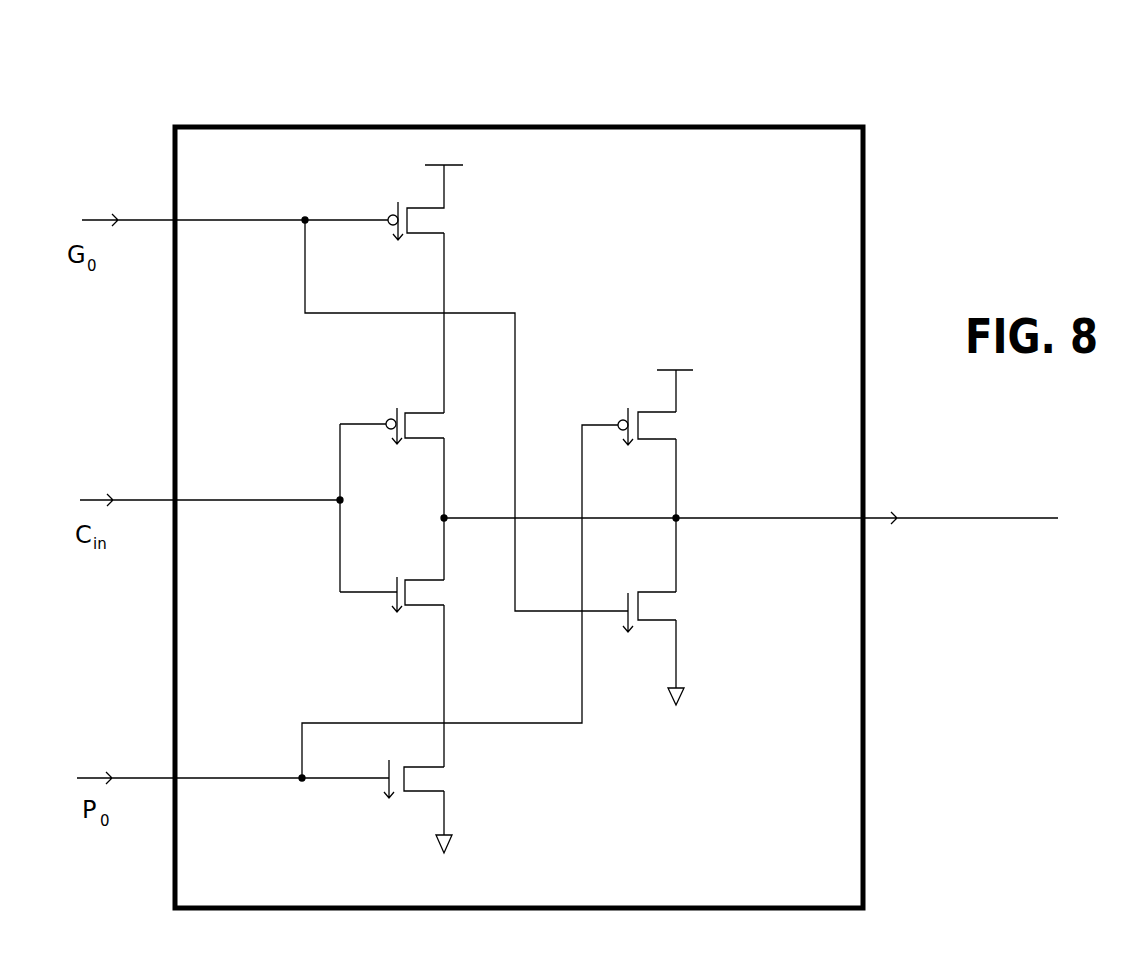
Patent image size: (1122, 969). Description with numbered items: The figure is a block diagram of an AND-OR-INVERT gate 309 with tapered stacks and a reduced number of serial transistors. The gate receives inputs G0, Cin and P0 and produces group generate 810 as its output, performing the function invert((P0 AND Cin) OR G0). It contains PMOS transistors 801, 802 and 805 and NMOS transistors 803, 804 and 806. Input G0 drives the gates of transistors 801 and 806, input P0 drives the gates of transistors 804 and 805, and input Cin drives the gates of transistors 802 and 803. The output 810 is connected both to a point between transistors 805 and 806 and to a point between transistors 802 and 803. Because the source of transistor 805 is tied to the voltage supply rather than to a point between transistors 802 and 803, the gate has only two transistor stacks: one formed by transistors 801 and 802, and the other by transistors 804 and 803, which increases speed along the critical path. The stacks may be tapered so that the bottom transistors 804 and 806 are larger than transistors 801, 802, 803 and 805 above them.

The AND-OR-INVERT gate 309 is at (576, 477).
The PMOS transistor 801 is at (402, 202).
The PMOS transistor 802 is at (438, 426).
The NMOS transistor 803 is at (441, 594).
The NMOS transistor 804 is at (440, 779).
The PMOS transistor 805 is at (675, 407).
The NMOS transistor 806 is at (678, 612).
The group generate output 810 is at (749, 539).